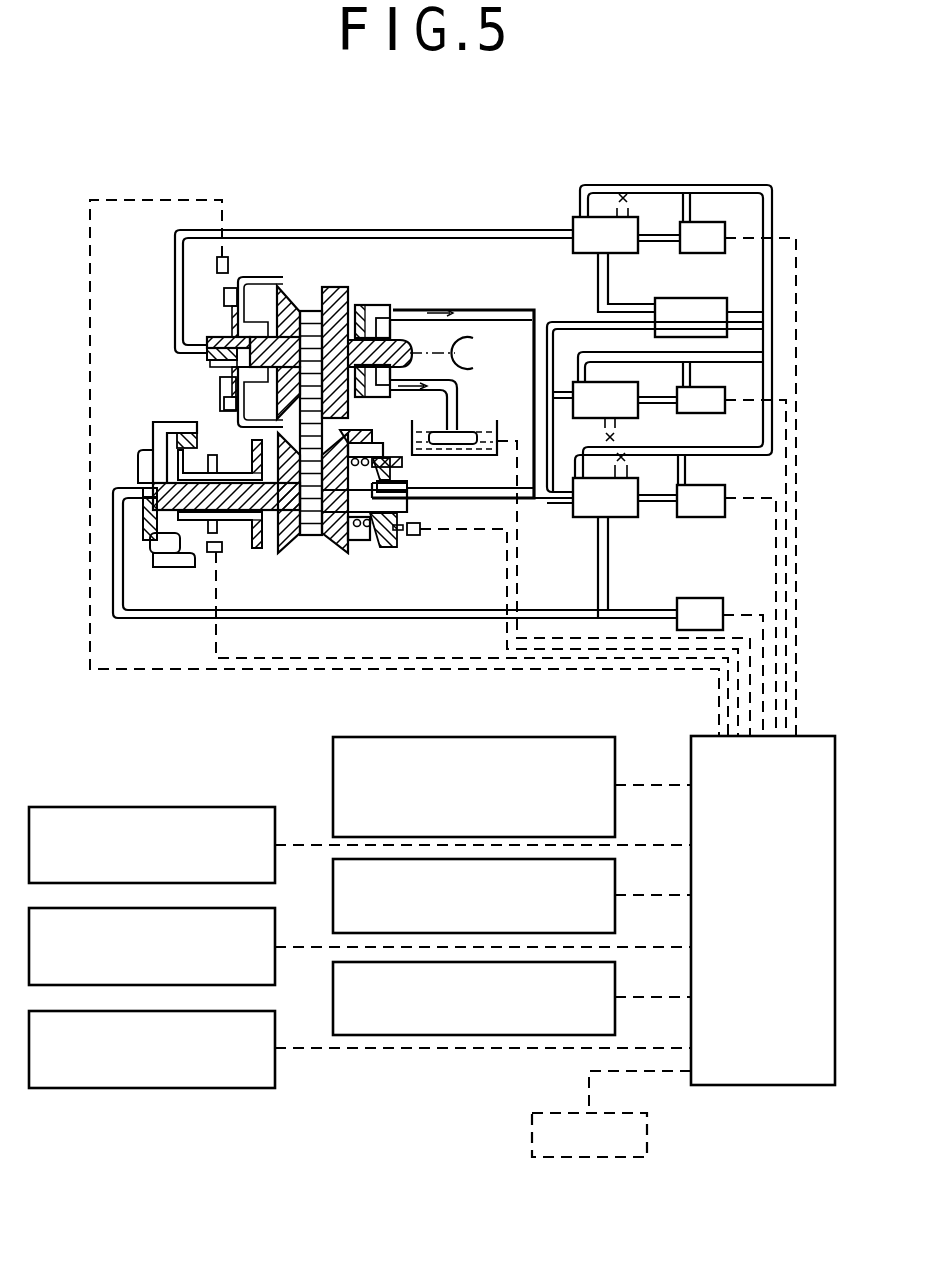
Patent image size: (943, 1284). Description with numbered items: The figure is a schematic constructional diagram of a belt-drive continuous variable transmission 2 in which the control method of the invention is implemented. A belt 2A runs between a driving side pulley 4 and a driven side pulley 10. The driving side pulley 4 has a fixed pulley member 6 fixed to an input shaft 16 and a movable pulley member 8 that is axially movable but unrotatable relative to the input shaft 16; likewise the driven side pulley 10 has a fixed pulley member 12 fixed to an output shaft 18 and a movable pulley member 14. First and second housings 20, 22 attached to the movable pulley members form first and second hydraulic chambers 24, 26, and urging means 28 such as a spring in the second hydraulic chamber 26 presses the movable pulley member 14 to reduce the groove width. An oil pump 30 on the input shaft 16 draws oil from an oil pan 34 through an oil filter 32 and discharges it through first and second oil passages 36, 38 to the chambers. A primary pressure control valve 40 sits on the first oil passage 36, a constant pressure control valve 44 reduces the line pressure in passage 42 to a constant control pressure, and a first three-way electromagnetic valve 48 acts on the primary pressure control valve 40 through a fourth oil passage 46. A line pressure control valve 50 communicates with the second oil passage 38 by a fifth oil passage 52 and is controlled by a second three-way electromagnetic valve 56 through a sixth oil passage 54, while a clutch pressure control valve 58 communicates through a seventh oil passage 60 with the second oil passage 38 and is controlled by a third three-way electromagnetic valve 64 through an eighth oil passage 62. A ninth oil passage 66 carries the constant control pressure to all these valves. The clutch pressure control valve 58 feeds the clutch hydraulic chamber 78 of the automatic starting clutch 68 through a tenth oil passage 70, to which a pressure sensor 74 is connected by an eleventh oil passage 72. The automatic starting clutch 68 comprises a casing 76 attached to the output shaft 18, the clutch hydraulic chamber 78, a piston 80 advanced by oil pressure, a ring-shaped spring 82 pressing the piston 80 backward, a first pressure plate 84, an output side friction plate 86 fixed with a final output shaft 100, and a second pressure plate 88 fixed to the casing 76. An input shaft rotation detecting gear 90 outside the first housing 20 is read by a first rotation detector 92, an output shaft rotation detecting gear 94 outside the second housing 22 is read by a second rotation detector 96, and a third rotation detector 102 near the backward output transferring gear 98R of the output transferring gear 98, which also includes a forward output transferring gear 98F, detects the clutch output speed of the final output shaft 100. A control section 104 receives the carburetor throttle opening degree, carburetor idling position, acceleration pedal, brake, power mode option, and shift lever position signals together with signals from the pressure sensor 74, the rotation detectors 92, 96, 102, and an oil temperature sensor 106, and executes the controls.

The continuous variable transmission 2 is at (520, 173).
The belt 2A is at (318, 300).
The driving side pulley 4 is at (365, 290).
The driving side fixed pulley member 6 is at (380, 305).
The driving side movable pulley member 8 is at (286, 310).
The driven side pulley 10 is at (318, 558).
The driven side fixed pulley member 12 is at (289, 553).
The driven side movable pulley member 14 is at (335, 553).
The input shaft 16 is at (400, 352).
The output shaft 18 is at (278, 560).
The first housing 20 is at (248, 295).
The second housing 22 is at (372, 445).
The first hydraulic chamber 24 is at (268, 300).
The second hydraulic chamber 26 is at (362, 540).
The urging means 28 is at (380, 543).
The oil pump 30 is at (405, 308).
The oil filter 32 is at (457, 415).
The oil pan 34 is at (480, 453).
The first oil passage 36 is at (540, 310).
The second oil passage 38 is at (532, 347).
The primary pressure control valve 40 is at (590, 240).
The passage 42 is at (625, 312).
The constant pressure control valve 44 is at (712, 305).
The fourth oil passage 46 is at (665, 240).
The first 3-way electromagnetic valve 48 is at (700, 240).
The line pressure control valve 50 is at (628, 405).
The fifth oil passage 52 is at (558, 385).
The sixth oil passage 54 is at (652, 398).
The second 3-way electromagnetic valve 56 is at (718, 406).
The clutch pressure control valve 58 is at (592, 512).
The seventh oil passage 60 is at (550, 503).
The eighth oil passage 62 is at (660, 498).
The third 3-way electromagnetic valve 64 is at (712, 512).
The ninth oil passage 66 is at (765, 185).
The automatic starting clutch 68 is at (152, 407).
The tenth oil passage 70 is at (536, 612).
The eleventh oil passage 72 is at (632, 610).
The pressure sensor 74 is at (712, 608).
The casing 76 is at (152, 435).
The clutch hydraulic chamber 78 is at (141, 470).
The piston 80 is at (143, 520).
The ring-shaped spring 82 is at (160, 540).
The first pressure plate 84 is at (160, 560).
The friction plate 86 is at (120, 605).
The second pressure plate 88 is at (170, 565).
The input shaft rotation detecting gear 90 is at (224, 292).
The first rotation detector 92 is at (217, 266).
The output shaft rotation detecting gear 94 is at (395, 465).
The second rotation detector 96 is at (420, 533).
The output transferring gear 98 is at (185, 375).
The backward output transferring gear 98R is at (228, 410).
The forward output transferring gear 98F is at (214, 460).
The final output shaft 100 is at (228, 533).
The third rotation detector 102 is at (212, 552).
The control section 104 is at (762, 1088).
The oil temperature sensor 106 is at (493, 433).